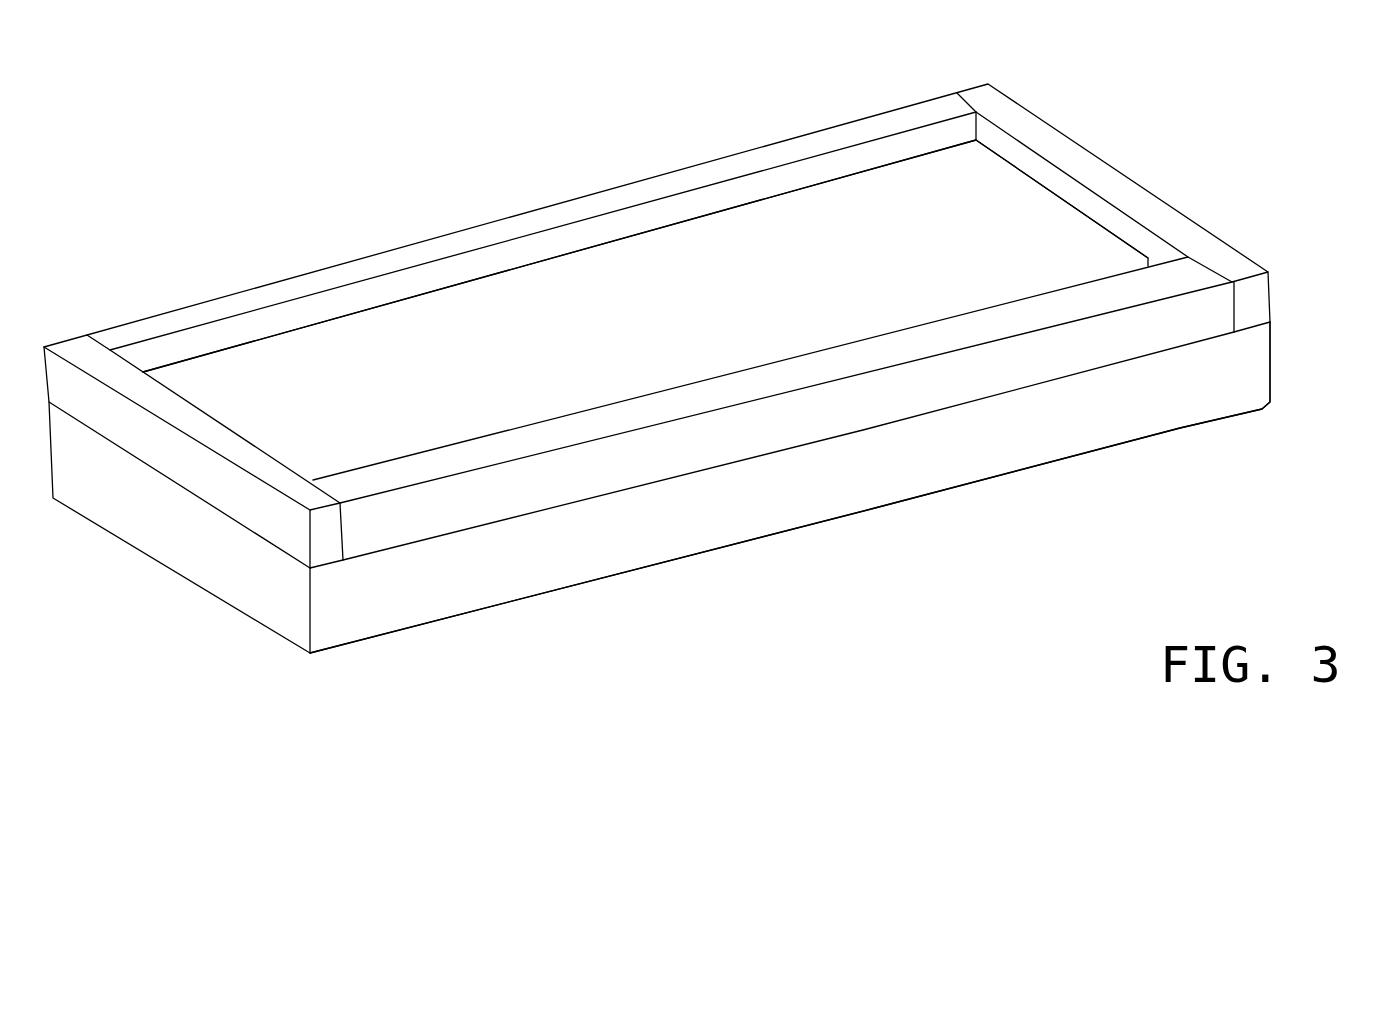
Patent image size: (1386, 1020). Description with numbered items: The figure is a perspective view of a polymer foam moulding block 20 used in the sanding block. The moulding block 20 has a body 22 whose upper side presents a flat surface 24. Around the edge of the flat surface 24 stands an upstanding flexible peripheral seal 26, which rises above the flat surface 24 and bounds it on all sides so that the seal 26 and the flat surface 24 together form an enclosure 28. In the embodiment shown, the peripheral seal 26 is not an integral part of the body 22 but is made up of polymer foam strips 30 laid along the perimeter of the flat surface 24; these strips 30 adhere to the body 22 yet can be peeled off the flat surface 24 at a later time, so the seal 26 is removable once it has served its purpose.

The polymer foam moulding block 20 is at (267, 588).
The body 22 is at (1200, 417).
The flat surface 24 is at (450, 357).
The peripheral seal 26 is at (842, 417).
The enclosure 28 is at (773, 283).
The polymer foam strips 30 is at (823, 140).